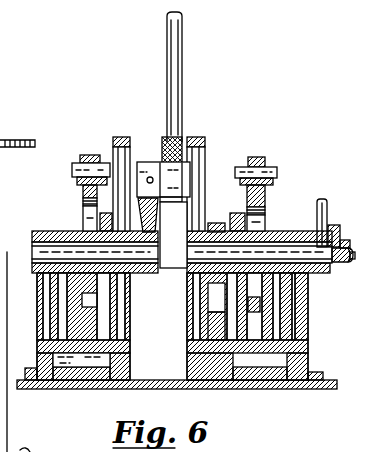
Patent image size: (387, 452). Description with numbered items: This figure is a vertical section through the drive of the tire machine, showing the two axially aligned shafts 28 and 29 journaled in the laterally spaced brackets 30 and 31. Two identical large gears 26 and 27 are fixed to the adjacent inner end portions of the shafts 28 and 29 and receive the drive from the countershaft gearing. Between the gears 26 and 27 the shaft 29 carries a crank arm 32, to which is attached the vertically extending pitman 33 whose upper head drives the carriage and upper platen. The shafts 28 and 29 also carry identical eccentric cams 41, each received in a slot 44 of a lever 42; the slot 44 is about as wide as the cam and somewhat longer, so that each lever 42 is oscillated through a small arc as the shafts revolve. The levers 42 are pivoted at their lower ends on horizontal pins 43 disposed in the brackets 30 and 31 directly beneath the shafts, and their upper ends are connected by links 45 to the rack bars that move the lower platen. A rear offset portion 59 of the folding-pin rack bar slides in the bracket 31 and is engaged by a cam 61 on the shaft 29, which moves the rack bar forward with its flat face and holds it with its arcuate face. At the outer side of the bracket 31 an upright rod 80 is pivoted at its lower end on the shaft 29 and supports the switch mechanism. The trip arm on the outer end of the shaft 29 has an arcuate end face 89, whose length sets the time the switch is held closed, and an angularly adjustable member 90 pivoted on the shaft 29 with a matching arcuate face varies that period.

The large gear 26 is at (132, 143).
The large gear 27 is at (203, 143).
The shaft 28 is at (158, 262).
The shaft 29 is at (210, 303).
The bracket 30 is at (50, 320).
The bracket 31 is at (305, 325).
The crank arm 32 is at (150, 207).
The pitman 33 is at (180, 65).
The eccentric cam 41 is at (82, 220).
The lever 42 is at (82, 210).
The pin 43 is at (73, 377).
The slot 44 is at (82, 202).
The link 45 is at (78, 153).
The rear offset portion 59 is at (212, 335).
The cam 61 is at (212, 318).
The upright rod 80 is at (330, 208).
The arcuate end face 89 is at (334, 272).
The angularly adjustable member 90 is at (348, 266).